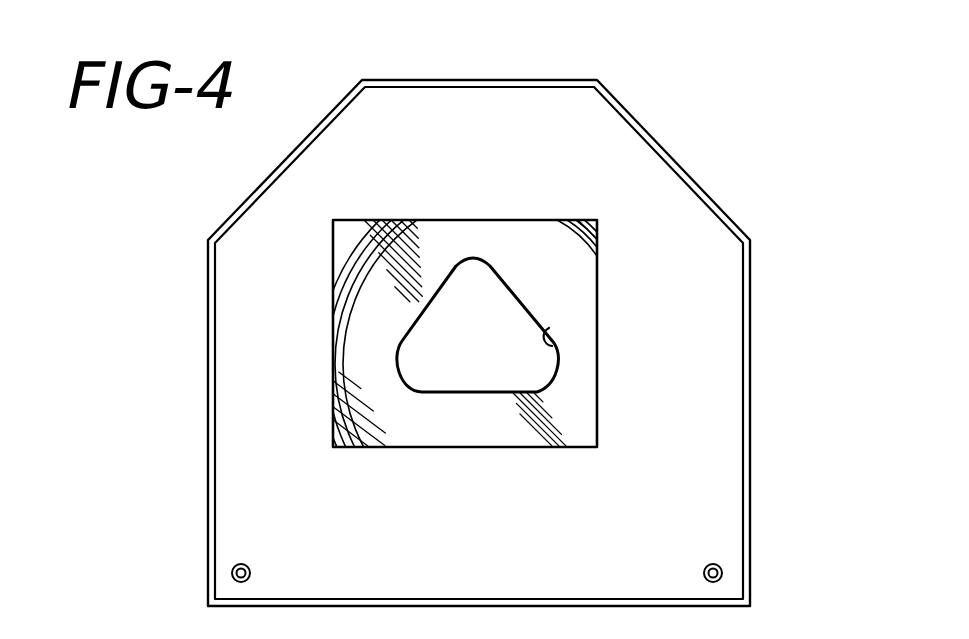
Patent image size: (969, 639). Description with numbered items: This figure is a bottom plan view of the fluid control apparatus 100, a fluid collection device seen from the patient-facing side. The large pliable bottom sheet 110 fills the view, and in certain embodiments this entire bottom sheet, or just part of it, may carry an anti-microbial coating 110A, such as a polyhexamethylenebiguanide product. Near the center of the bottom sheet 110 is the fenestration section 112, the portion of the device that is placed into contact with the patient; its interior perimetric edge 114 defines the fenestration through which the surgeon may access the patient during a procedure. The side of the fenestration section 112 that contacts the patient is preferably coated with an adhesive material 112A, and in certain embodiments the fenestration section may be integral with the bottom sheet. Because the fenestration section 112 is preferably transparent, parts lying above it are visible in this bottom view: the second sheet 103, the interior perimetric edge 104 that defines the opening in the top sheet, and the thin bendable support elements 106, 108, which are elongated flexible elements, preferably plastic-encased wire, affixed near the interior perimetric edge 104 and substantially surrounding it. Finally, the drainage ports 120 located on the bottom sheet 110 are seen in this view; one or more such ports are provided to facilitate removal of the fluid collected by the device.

The fluid control apparatus 100 is at (724, 124).
The second sheet 103 is at (353, 222).
The interior perimetric edge 104 is at (403, 233).
The bendable support element 106 is at (348, 243).
The second bendable element 108 is at (356, 270).
The bottom sheet 110 is at (250, 444).
The anti-microbial coating 110A is at (265, 506).
The fenestration section 112 is at (590, 341).
The adhesive material 112A is at (577, 277).
The interior perimetric edge 114 is at (544, 346).
The drainage ports 120 is at (232, 573).